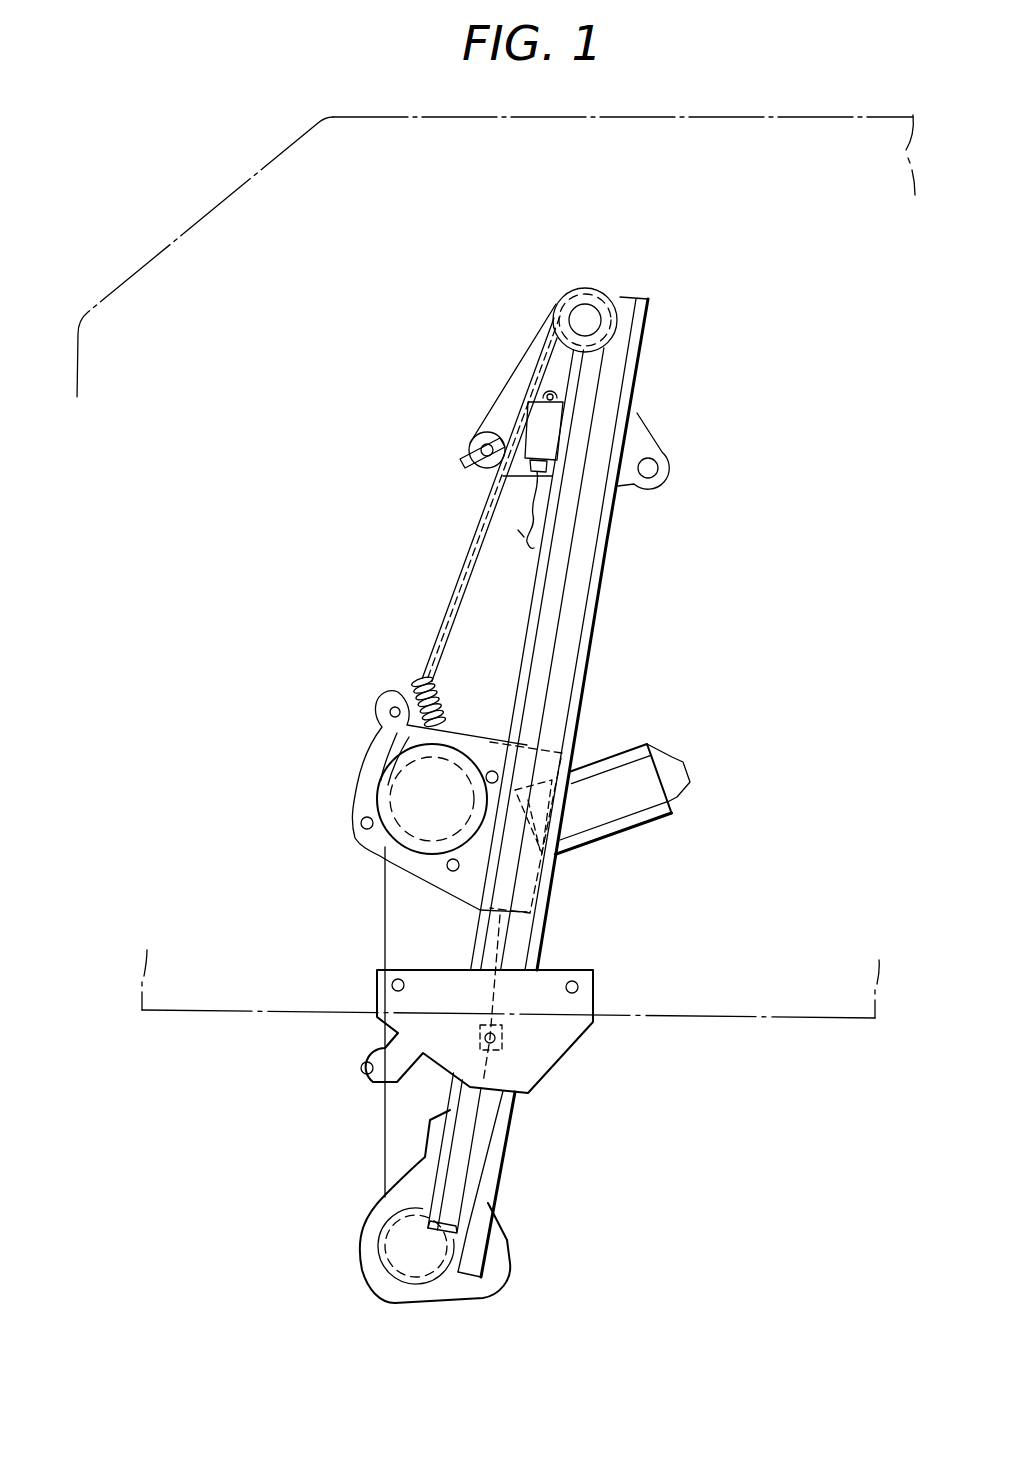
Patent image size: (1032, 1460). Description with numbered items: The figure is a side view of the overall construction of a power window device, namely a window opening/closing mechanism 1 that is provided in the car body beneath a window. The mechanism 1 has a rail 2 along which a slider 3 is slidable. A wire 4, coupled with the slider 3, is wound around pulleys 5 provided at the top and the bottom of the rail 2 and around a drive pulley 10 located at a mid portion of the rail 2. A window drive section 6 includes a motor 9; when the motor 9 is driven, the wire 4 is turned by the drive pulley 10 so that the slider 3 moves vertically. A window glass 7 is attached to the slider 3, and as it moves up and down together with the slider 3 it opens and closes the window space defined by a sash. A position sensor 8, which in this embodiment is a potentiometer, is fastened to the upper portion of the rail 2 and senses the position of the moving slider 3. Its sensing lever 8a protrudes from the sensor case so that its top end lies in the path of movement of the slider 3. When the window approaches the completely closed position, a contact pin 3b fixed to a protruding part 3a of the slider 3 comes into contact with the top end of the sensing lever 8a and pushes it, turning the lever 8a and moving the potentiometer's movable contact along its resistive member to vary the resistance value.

The window opening/closing mechanism 1 is at (738, 593).
The rail 2 is at (540, 787).
The slider 3 is at (543, 1058).
The protruding part 3a is at (395, 1059).
The contact pin 3b is at (366, 1076).
The wire 4 is at (562, 790).
The pulleys 5 is at (586, 318).
The window drive section 6 is at (597, 841).
The window glass 7 is at (702, 998).
The position sensor 8 is at (545, 432).
The sensing lever 8a is at (462, 463).
The motor 9 is at (630, 780).
The drive pulley 10 is at (417, 817).